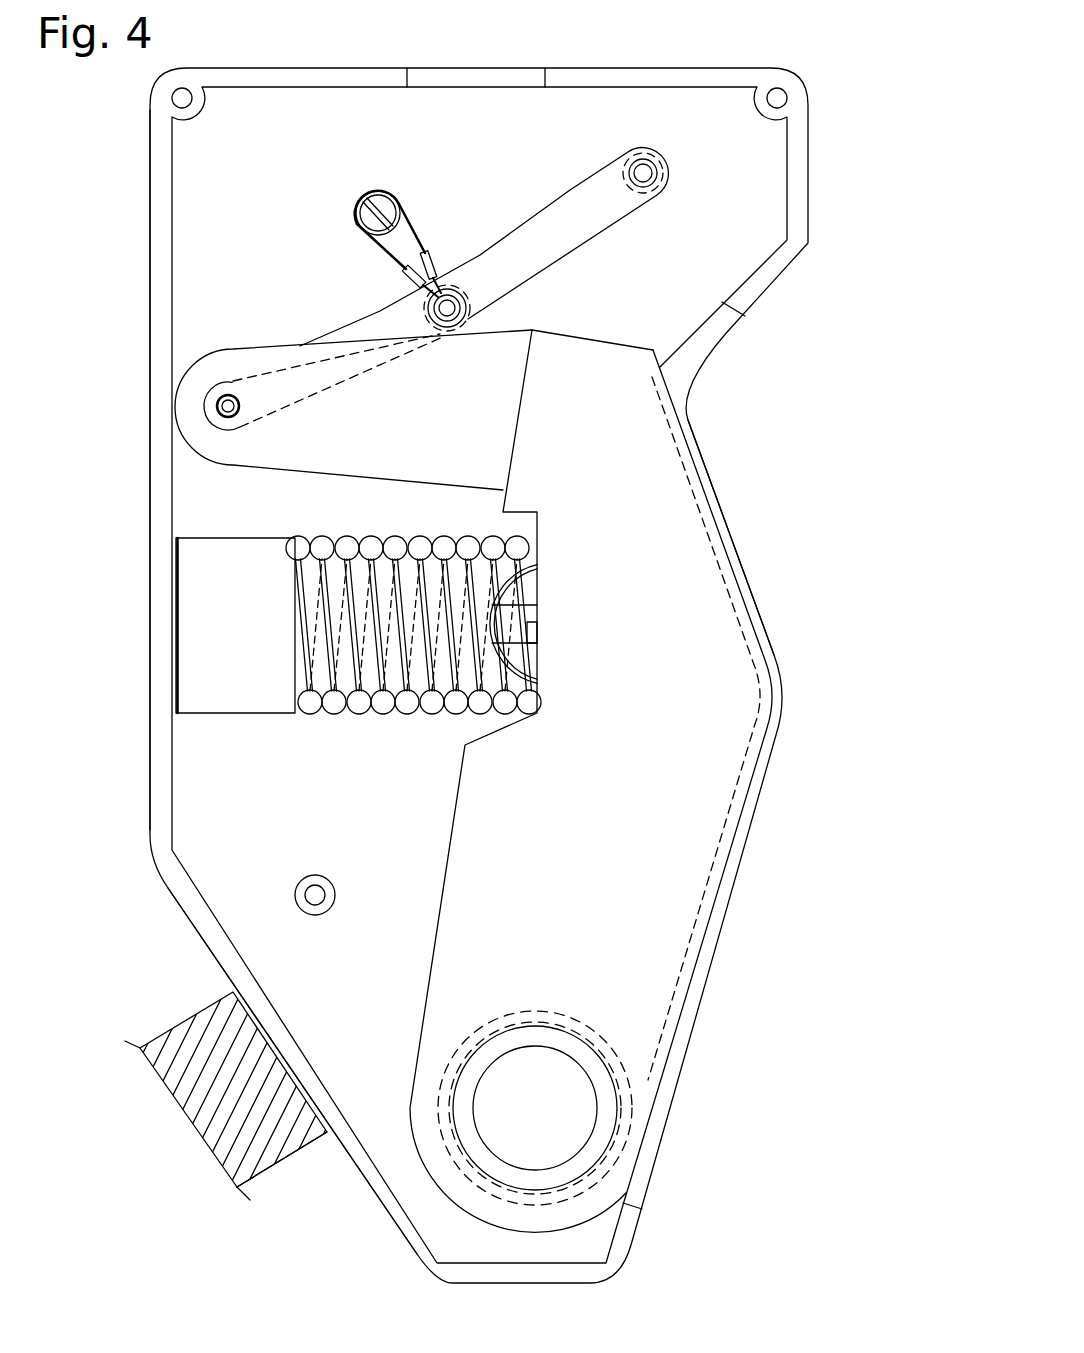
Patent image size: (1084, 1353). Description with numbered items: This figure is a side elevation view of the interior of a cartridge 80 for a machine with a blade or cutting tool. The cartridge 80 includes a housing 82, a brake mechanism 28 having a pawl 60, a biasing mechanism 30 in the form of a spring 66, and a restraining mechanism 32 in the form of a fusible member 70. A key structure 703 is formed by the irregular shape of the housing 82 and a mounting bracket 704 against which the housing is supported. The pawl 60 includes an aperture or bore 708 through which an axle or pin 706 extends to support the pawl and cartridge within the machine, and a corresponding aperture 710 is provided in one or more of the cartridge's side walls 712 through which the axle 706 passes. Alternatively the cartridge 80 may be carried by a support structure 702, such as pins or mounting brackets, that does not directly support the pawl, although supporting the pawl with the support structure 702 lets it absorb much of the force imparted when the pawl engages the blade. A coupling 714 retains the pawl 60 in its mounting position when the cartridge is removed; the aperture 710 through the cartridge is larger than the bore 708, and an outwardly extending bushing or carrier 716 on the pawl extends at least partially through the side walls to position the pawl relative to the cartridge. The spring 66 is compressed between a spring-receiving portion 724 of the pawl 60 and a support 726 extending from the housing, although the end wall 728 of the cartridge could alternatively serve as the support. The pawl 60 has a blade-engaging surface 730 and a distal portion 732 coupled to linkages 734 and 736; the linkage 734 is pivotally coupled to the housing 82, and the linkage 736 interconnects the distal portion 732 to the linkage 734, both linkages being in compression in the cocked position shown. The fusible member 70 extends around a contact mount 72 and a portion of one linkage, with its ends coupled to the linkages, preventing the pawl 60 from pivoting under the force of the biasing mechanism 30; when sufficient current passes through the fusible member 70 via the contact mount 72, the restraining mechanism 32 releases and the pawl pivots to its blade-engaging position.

The brake mechanism 28 is at (376, 745).
The biasing mechanism 30 is at (398, 594).
The restraining mechanism 32 is at (373, 218).
The pawl 60 is at (618, 681).
The spring 66 is at (420, 540).
The fusible member 70 is at (372, 250).
The contact mount 72 is at (383, 205).
The cartridge 80 is at (155, 908).
The housing 82 is at (152, 864).
The support structure 702 is at (600, 1117).
The key structure 703 is at (202, 996).
The mounting bracket 704 is at (262, 1173).
The axle or pin 706 is at (563, 1145).
The aperture or bore 708 is at (547, 1048).
The aperture 710 is at (458, 1040).
The side walls 712 is at (316, 958).
The coupling 714 is at (517, 1022).
The bushing or carrier 716 is at (543, 1025).
The spring-receiving portion 724 is at (532, 512).
The support 726 is at (205, 632).
The end wall 728 is at (150, 500).
The blade-engaging surface 730 is at (681, 417).
The distal portion 732 is at (374, 424).
The linkage 734 is at (563, 210).
The linkage 736 is at (357, 335).